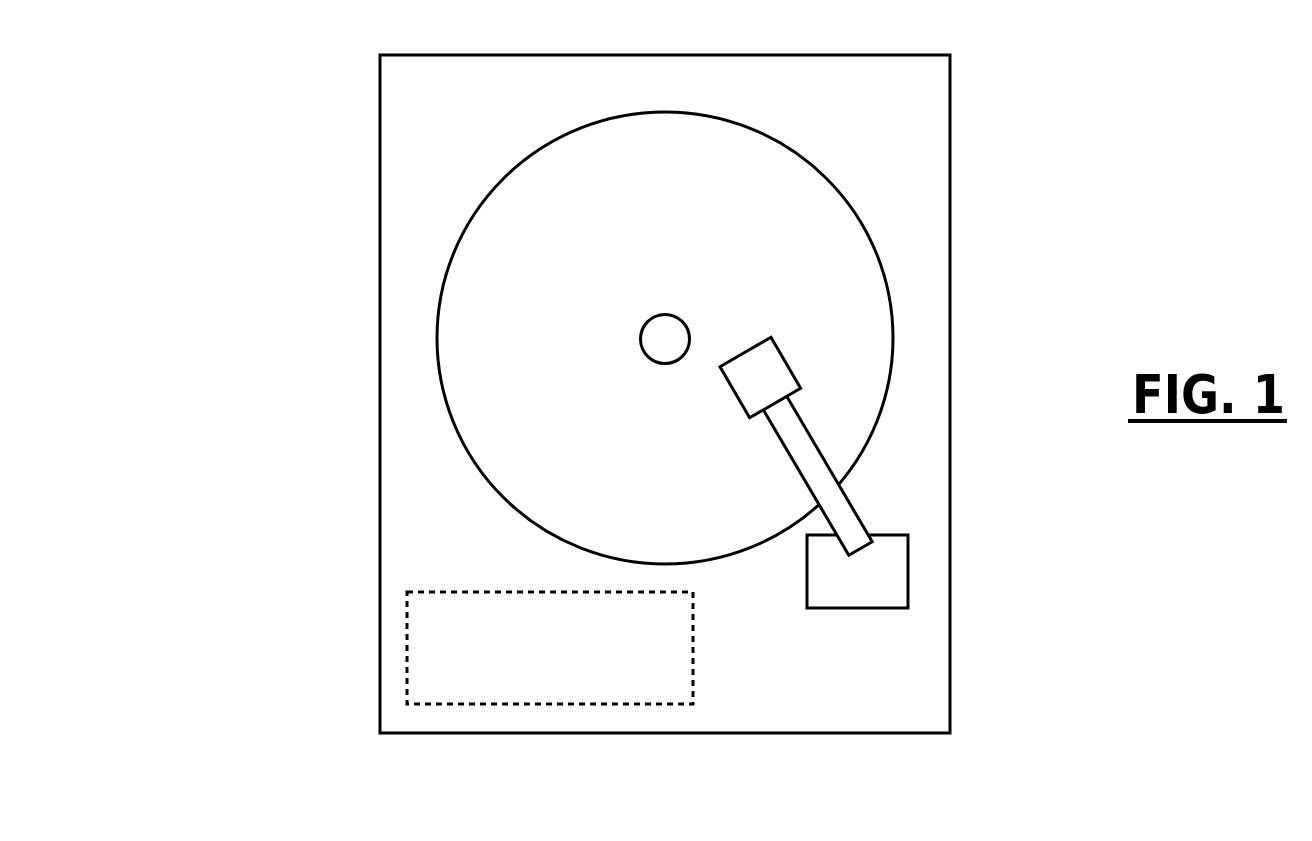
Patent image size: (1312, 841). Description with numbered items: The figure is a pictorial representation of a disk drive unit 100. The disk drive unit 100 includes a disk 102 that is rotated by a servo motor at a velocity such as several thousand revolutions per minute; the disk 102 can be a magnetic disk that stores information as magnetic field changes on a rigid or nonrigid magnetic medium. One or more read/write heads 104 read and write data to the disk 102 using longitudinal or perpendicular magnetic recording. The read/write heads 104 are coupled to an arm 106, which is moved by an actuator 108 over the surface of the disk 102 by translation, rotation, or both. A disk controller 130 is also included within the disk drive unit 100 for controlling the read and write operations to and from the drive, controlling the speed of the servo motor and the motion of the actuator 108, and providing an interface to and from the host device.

The disk drive unit 100 is at (325, 410).
The disk 102 is at (520, 163).
The read/write heads 104 is at (826, 376).
The arm 106 is at (822, 457).
The actuator 108 is at (808, 587).
The disk controller 130 is at (550, 648).